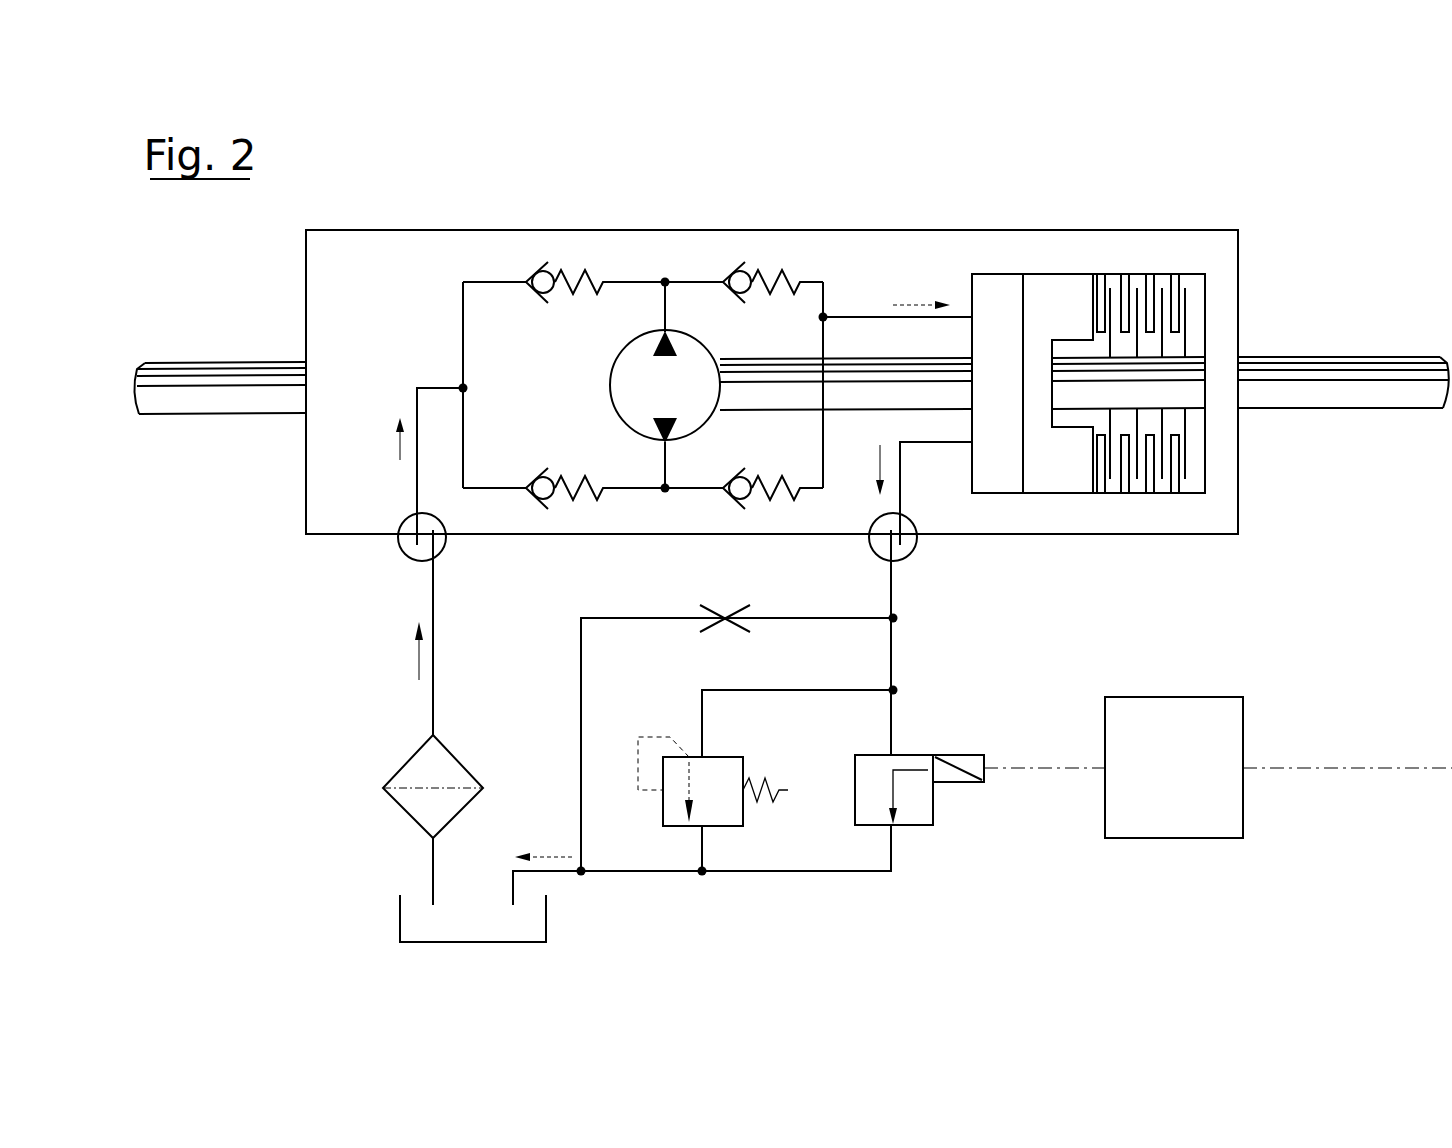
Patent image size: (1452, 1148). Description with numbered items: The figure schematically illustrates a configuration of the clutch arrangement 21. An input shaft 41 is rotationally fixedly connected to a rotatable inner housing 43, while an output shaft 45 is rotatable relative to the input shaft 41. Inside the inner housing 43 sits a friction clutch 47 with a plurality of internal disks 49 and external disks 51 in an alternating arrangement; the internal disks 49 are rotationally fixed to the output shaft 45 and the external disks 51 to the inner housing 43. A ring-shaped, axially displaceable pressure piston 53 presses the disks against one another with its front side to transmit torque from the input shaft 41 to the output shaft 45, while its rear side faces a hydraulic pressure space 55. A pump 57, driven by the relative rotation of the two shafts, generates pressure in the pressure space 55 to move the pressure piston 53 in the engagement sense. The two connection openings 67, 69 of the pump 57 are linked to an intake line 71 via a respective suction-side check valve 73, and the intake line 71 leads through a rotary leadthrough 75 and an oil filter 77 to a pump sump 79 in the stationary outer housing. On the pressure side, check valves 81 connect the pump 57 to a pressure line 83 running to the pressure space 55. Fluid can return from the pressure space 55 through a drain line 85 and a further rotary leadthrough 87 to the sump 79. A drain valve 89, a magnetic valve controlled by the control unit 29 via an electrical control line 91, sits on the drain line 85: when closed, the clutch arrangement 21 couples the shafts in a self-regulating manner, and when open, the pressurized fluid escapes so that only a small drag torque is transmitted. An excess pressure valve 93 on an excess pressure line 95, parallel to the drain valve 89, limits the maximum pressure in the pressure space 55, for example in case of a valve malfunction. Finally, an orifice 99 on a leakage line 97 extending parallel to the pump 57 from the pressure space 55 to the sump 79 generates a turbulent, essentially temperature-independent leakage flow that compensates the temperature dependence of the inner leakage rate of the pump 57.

The clutch arrangement 21 is at (601, 168).
The control unit 29 is at (1191, 784).
The input shaft 41 is at (195, 400).
The inner housing 43 is at (362, 265).
The output shaft 45 is at (1362, 392).
The friction clutch 47 is at (1138, 324).
The internal disks 49 is at (1163, 343).
The external disks 51 is at (1173, 277).
The pressure piston 53 is at (1053, 292).
The hydraulic pressure space 55 is at (988, 282).
The pump 57 is at (607, 383).
The connection opening 67 is at (608, 319).
The connection opening 69 is at (608, 453).
The intake line 71 is at (415, 400).
The check valve 73 is at (563, 275).
The rotary leadthrough 75 is at (400, 550).
The oil filter 77 is at (408, 762).
The pump sump 79 is at (400, 923).
The check valves 81 is at (762, 272).
The pressure line 83 is at (862, 315).
The drain line 85 is at (902, 489).
The rotary leadthrough 87 is at (916, 552).
The drain valve 89 is at (933, 805).
The electrical control line 91 is at (1057, 772).
The excess pressure valve 93 is at (723, 755).
The excess pressure line 95 is at (733, 688).
The leakage line 97 is at (798, 615).
The orifice 99 is at (723, 615).